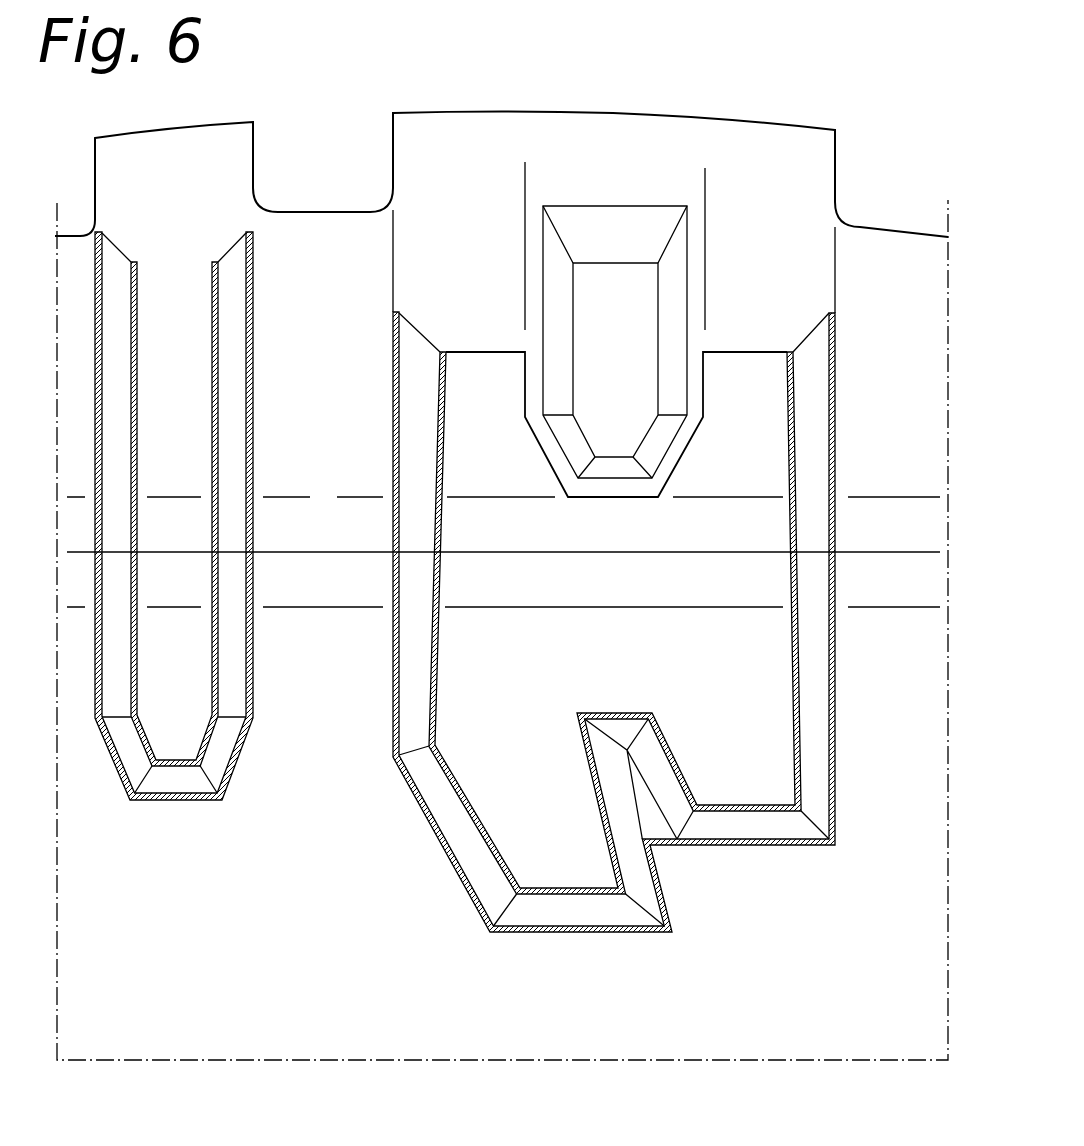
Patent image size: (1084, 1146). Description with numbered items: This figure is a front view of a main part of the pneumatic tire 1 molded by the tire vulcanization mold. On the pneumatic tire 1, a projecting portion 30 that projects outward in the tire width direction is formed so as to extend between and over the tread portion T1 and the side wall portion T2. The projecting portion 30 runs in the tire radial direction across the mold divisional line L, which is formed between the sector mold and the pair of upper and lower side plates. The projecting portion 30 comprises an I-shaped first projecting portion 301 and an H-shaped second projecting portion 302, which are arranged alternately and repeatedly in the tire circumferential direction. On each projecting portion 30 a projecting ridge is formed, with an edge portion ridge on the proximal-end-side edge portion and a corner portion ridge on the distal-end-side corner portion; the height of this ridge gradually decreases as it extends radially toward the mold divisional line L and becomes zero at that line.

The pneumatic tire 1 is at (891, 185).
The projecting portion 30 is at (465, 536).
The first projecting portion 301 is at (235, 474).
The second projecting portion 302 is at (614, 536).
The mold divisional line L is at (283, 552).
The tread portion T1 is at (342, 312).
The side wall portion T2 is at (345, 876).